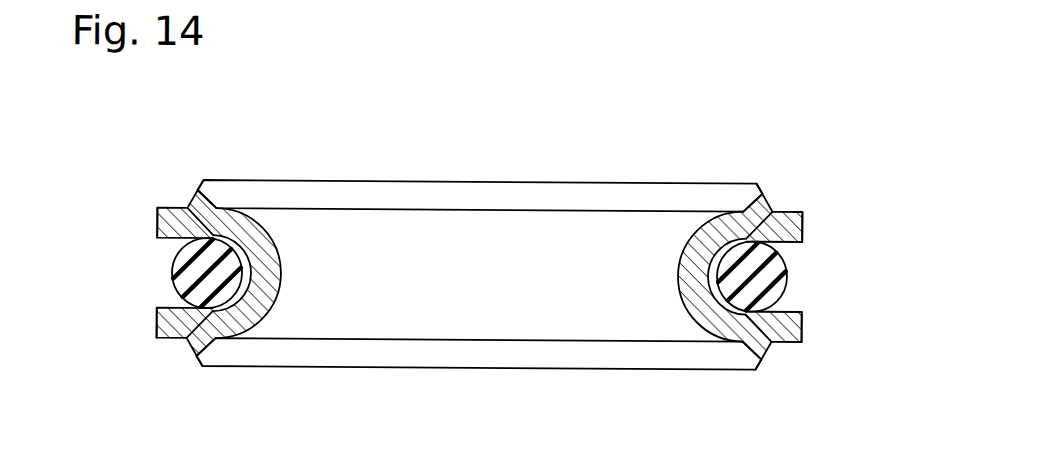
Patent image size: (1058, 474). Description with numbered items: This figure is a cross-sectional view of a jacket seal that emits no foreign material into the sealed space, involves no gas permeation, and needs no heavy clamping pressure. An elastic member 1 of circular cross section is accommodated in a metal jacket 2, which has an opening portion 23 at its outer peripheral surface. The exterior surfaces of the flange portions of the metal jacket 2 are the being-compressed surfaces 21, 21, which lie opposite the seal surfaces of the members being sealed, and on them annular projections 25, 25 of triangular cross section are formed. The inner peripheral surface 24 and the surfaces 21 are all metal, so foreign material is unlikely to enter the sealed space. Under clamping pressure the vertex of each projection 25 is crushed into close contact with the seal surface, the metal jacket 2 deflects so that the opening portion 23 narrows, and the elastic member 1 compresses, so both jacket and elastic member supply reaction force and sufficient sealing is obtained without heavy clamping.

The elastic member 1 is at (167, 274).
The metal jacket 2 is at (474, 178).
The being-compressed surface 21 is at (170, 208).
The opening portion 23 is at (158, 254).
The inner peripheral surface 24 is at (280, 270).
The projection 25 is at (201, 188).